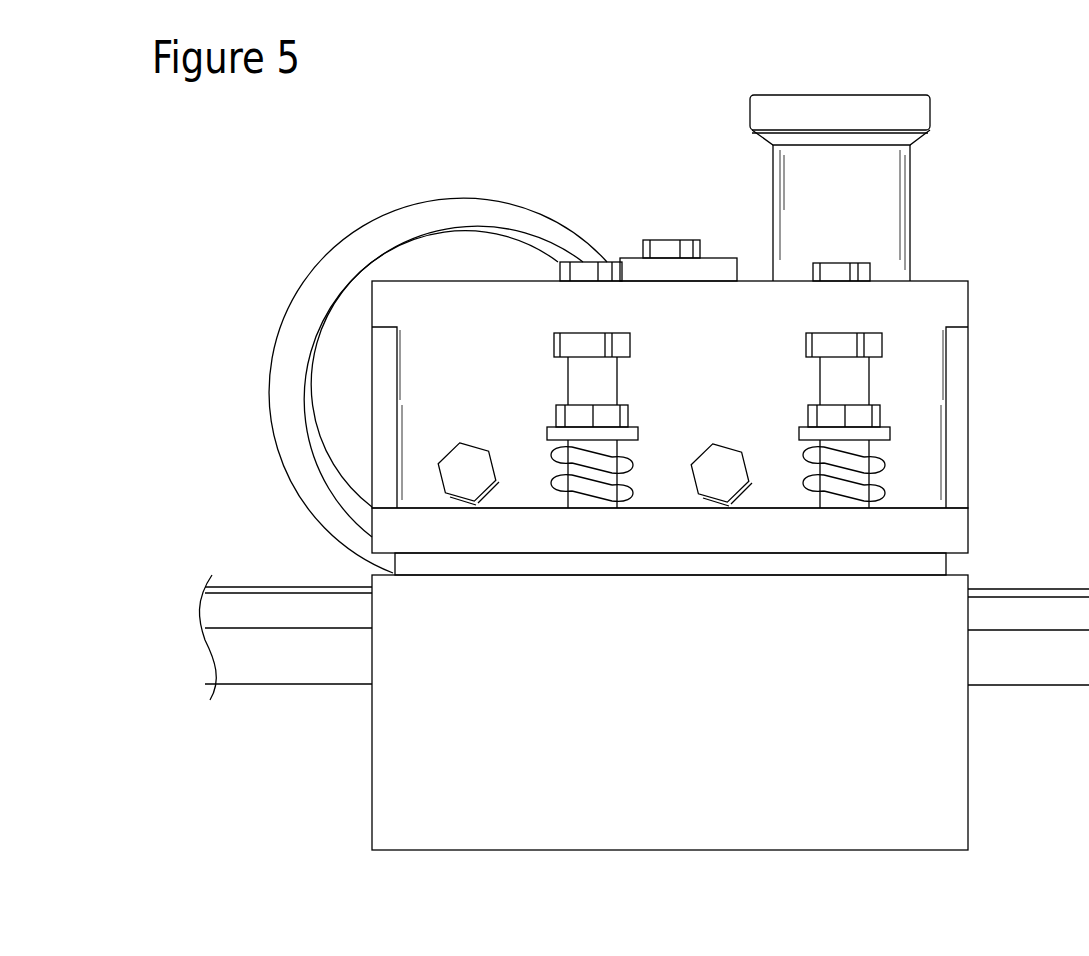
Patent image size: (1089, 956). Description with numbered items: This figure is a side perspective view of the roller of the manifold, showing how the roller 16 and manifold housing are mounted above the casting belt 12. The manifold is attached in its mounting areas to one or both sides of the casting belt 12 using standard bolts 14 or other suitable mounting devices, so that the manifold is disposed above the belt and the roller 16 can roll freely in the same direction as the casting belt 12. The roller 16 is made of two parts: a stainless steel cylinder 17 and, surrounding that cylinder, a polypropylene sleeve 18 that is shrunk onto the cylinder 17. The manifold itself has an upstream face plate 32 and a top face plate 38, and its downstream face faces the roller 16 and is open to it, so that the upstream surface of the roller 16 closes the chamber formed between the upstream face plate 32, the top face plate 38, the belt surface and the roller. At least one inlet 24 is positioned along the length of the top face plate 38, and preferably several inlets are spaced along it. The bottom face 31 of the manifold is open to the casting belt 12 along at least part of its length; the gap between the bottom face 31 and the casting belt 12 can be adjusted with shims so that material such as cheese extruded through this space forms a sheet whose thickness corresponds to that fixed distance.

The casting belt 12 is at (272, 590).
The bolts 14 is at (883, 335).
The roller 16 is at (325, 243).
The stainless steel cylinder 17 is at (427, 232).
The polypropylene sleeve 18 is at (472, 205).
The inlet 24 is at (873, 94).
The bottom face 31 is at (393, 573).
The upstream face plate 32 is at (968, 366).
The top face plate 38 is at (755, 281).